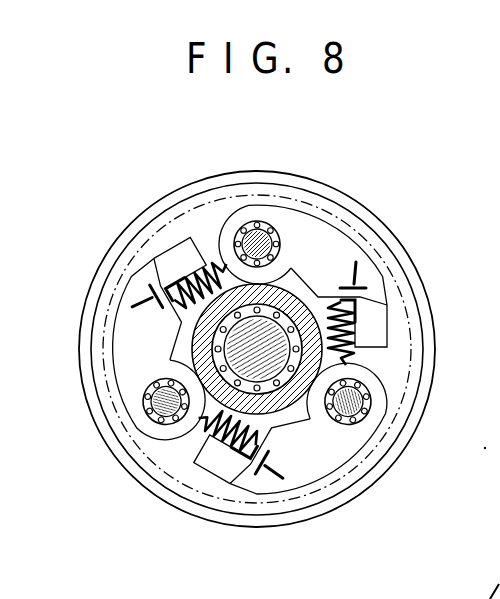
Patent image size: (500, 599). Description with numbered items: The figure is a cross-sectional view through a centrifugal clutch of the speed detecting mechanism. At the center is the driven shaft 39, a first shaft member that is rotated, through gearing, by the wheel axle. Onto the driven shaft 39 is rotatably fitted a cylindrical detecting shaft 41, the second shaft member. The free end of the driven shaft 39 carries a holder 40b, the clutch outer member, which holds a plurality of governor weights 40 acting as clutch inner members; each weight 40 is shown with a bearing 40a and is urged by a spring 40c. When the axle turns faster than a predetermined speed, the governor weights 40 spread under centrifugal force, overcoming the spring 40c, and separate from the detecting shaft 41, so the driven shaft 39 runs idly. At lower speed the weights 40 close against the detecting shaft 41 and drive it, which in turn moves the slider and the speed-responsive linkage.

The driven shaft 39 is at (271, 338).
The governor weights 40 is at (307, 230).
The roller bearing of lever 40a is at (258, 228).
The holder 40b is at (369, 218).
The spring 40c is at (390, 318).
The detecting shaft 41 is at (287, 385).